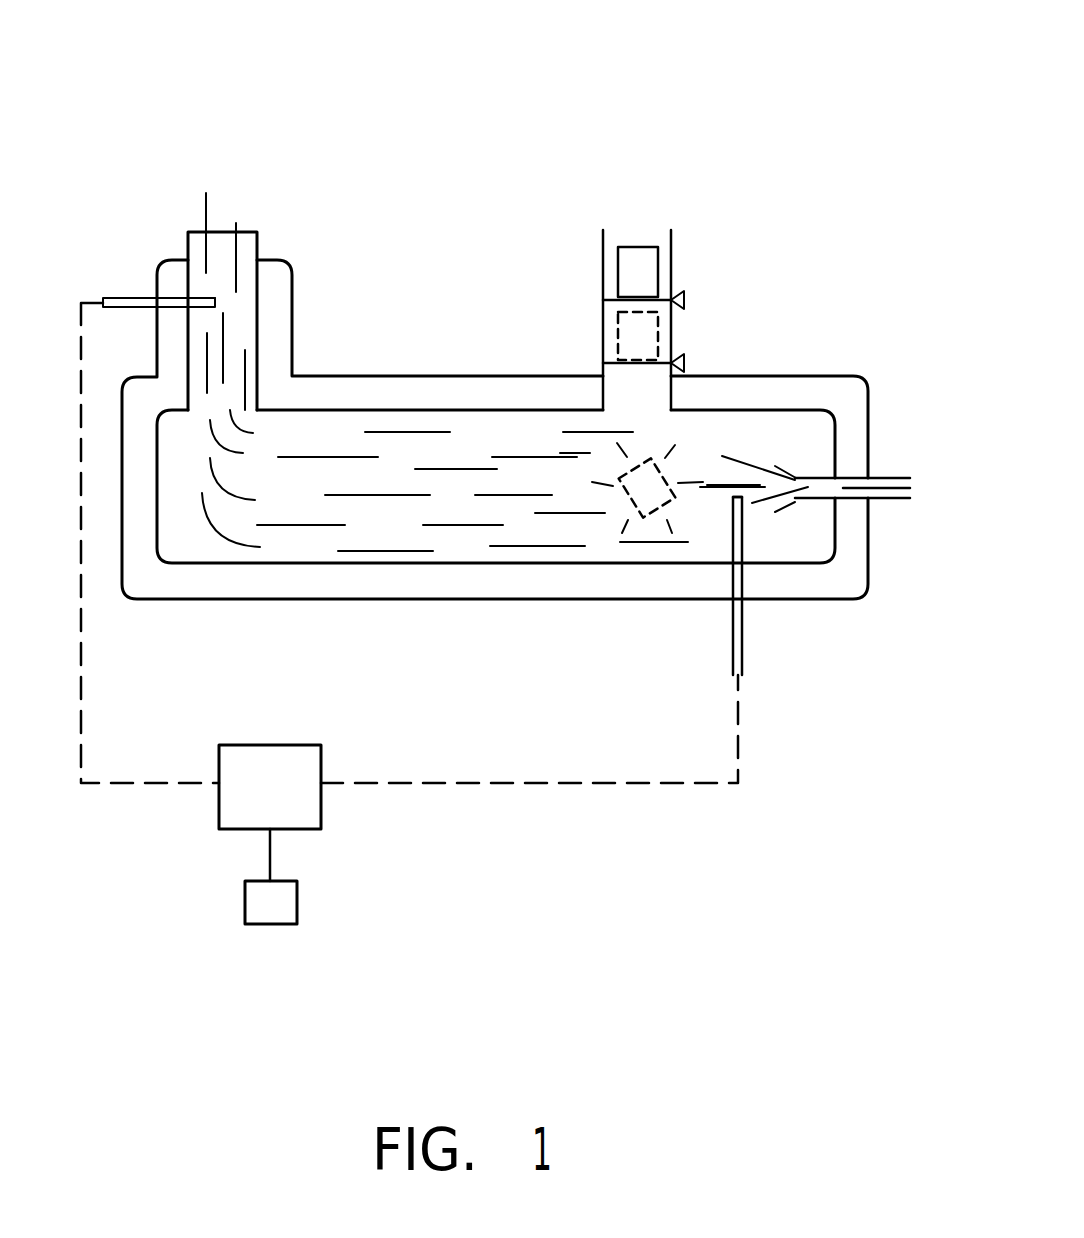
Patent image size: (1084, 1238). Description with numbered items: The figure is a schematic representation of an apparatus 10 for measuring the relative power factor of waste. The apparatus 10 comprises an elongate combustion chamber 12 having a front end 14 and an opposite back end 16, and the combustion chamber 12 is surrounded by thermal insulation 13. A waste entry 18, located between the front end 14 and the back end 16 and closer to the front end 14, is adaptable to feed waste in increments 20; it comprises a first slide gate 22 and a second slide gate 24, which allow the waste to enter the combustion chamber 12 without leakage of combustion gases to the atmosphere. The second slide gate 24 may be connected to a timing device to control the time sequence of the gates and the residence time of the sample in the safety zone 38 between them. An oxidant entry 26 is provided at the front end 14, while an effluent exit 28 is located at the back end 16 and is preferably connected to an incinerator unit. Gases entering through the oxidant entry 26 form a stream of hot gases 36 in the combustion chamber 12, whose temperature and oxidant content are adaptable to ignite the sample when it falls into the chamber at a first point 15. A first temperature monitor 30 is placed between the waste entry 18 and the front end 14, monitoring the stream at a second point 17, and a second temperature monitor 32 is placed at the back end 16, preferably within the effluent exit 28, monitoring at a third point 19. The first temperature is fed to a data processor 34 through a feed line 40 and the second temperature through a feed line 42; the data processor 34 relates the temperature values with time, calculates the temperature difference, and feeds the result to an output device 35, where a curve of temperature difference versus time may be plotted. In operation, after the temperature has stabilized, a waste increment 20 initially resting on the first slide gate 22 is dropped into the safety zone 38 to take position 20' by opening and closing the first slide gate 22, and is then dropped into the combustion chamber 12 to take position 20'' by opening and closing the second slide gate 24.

The apparatus 10 is at (572, 170).
The combustion chamber 12 is at (528, 547).
The thermal insulation 13 is at (230, 590).
The front end 14 is at (901, 406).
The first point 15 is at (630, 512).
The back end 16 is at (200, 279).
The second point 17 is at (743, 498).
The waste entry 18 is at (610, 266).
The third point 19 is at (215, 305).
The waste increment 20 is at (684, 225).
The waste increment position 20' is at (575, 318).
The waste increment position 20'' is at (628, 565).
The first slide gate 22 is at (663, 298).
The second slide gate 24 is at (628, 365).
The oxidant entry 26 is at (912, 487).
The effluent exit 28 is at (213, 242).
The first temperature monitor 30 is at (737, 645).
The second temperature monitor 32 is at (155, 298).
The data processor 34 is at (275, 796).
The output device 35 is at (288, 902).
The stream of hot gases 36 is at (467, 462).
The safety zone 38 is at (673, 333).
The feed line 40 is at (483, 783).
The feed line 42 is at (81, 642).